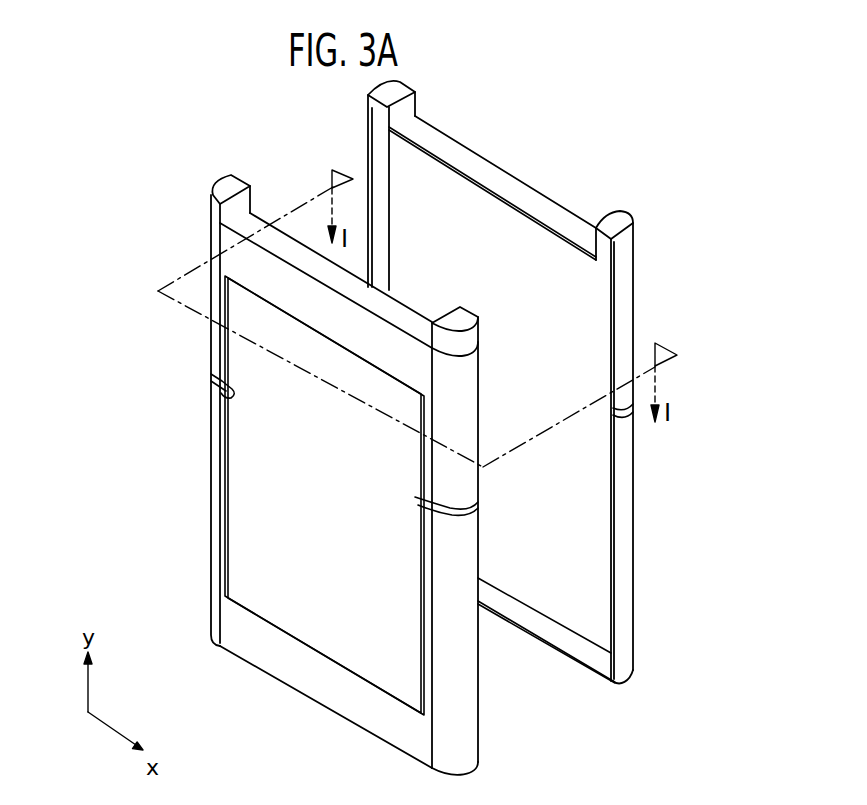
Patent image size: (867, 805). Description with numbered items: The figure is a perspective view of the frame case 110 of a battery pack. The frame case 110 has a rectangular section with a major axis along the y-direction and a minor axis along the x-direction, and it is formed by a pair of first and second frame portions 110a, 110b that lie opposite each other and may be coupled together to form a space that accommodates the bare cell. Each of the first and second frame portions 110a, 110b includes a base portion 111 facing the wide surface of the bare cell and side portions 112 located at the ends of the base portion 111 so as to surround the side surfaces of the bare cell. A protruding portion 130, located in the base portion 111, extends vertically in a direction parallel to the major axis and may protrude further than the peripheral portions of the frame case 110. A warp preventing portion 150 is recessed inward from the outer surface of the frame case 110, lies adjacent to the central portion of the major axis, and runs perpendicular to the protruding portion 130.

The frame case 110 is at (419, 435).
The first frame portion 110a is at (190, 497).
The second frame portion 110b is at (653, 482).
The base portion 111 is at (514, 241).
The side portion 112 is at (622, 285).
The protruding portion 130 is at (410, 630).
The warp preventing portion 150 is at (424, 514).